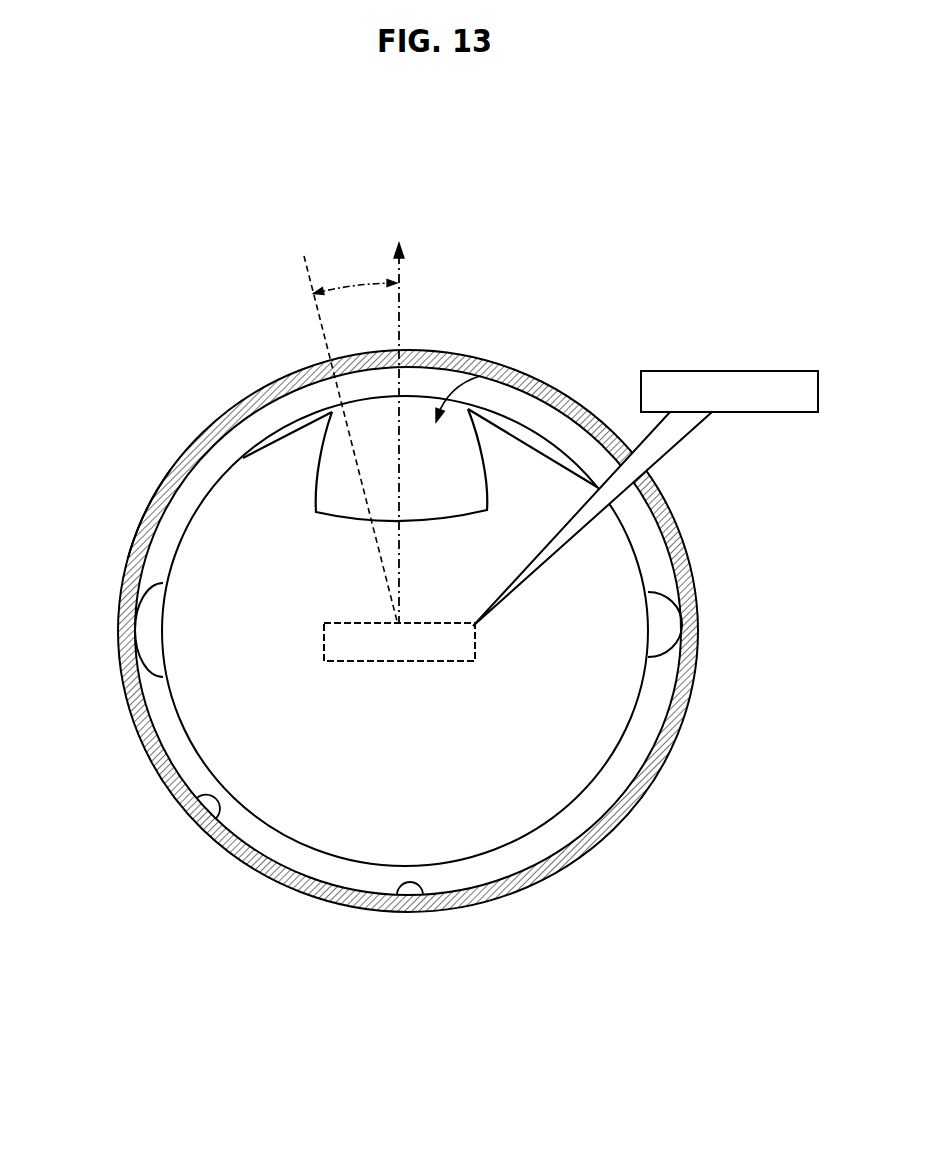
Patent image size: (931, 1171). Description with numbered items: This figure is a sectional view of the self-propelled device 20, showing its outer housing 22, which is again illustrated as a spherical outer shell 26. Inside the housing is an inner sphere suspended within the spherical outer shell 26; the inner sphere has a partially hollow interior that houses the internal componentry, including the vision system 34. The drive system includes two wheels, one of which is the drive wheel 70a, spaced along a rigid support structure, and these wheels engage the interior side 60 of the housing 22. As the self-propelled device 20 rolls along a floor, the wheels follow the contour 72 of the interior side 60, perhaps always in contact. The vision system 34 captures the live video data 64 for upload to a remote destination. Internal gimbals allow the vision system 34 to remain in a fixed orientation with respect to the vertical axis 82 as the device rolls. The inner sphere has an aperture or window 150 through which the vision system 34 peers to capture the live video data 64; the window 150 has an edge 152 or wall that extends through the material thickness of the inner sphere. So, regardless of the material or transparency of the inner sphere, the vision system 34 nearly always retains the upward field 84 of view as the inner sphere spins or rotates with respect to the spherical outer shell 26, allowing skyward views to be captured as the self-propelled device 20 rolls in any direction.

The self-propelled device 20 is at (556, 869).
The housing 22 is at (665, 759).
The outer shell 26 is at (146, 518).
The vision system 34 is at (697, 622).
The interior side 60 is at (196, 808).
The live video data 64 is at (740, 370).
The drive wheel 70a is at (138, 632).
The contour 72 is at (403, 898).
The vertical axis 82 is at (456, 250).
The upward field of view 84 is at (360, 285).
The window 150 is at (496, 366).
The edge 152 is at (327, 478).